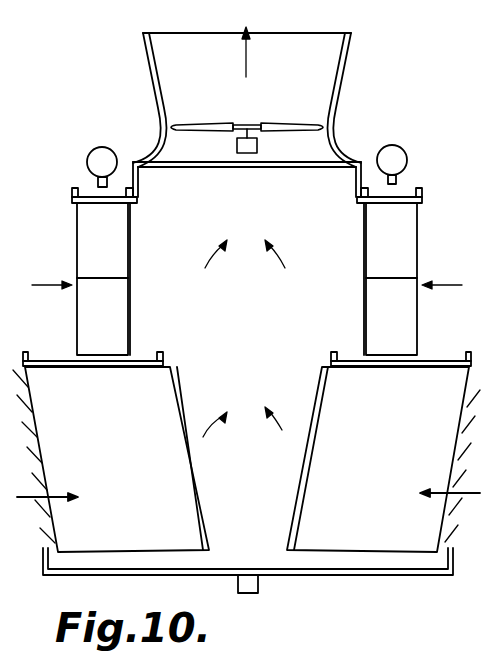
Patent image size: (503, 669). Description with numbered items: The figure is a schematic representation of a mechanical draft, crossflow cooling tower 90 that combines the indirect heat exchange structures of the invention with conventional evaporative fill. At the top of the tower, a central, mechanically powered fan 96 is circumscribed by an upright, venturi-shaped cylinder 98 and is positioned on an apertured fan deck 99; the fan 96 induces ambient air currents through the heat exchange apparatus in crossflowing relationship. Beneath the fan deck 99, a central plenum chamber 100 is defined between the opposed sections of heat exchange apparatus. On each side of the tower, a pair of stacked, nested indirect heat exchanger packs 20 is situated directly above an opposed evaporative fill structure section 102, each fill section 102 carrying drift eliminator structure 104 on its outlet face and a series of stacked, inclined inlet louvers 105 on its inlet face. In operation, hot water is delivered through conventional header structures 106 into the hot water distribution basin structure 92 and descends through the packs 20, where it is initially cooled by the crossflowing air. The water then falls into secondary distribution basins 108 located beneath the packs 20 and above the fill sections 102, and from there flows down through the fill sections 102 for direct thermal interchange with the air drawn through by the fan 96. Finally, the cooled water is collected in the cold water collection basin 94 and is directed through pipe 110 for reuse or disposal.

The indirect heat exchanger pack 20 is at (130, 288).
The mechanical draft crossflow cooling tower 90 is at (387, 100).
The hot water distribution basin structure 92 is at (70, 194).
The cold water collection basin 94 is at (336, 574).
The fan 96 is at (279, 123).
The venturi-shaped cylinder 98 is at (344, 74).
The fan deck 99 is at (358, 163).
The central plenum chamber 100 is at (244, 338).
The evaporative fill structure section 102 is at (248, 459).
The drift eliminator structure 104 is at (290, 523).
The inlet louvers 105 is at (470, 392).
The header structure 106 is at (99, 148).
The secondary distribution basin 108 is at (163, 356).
The pipe 110 is at (258, 585).